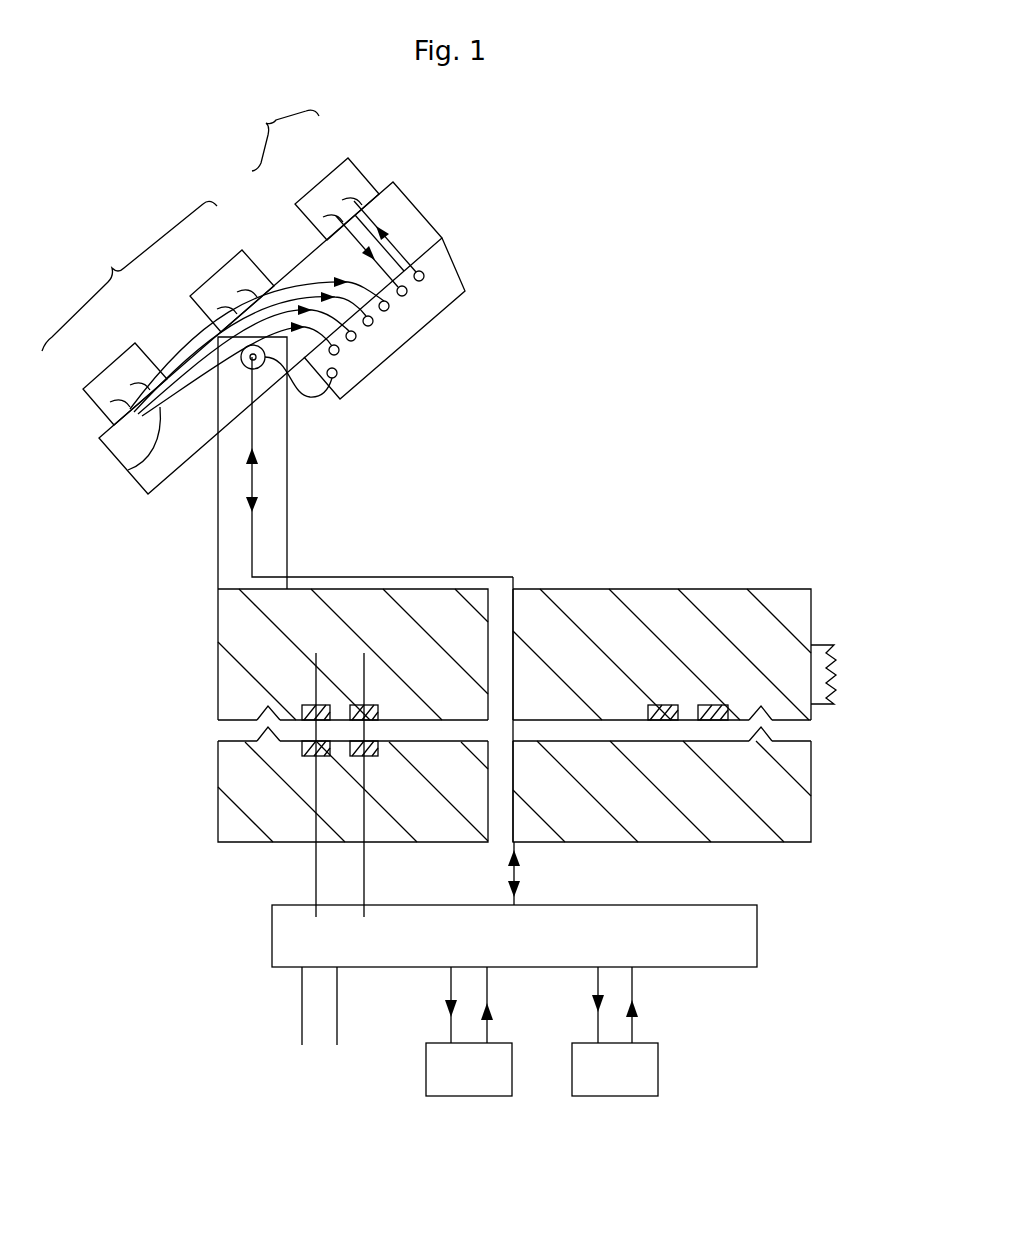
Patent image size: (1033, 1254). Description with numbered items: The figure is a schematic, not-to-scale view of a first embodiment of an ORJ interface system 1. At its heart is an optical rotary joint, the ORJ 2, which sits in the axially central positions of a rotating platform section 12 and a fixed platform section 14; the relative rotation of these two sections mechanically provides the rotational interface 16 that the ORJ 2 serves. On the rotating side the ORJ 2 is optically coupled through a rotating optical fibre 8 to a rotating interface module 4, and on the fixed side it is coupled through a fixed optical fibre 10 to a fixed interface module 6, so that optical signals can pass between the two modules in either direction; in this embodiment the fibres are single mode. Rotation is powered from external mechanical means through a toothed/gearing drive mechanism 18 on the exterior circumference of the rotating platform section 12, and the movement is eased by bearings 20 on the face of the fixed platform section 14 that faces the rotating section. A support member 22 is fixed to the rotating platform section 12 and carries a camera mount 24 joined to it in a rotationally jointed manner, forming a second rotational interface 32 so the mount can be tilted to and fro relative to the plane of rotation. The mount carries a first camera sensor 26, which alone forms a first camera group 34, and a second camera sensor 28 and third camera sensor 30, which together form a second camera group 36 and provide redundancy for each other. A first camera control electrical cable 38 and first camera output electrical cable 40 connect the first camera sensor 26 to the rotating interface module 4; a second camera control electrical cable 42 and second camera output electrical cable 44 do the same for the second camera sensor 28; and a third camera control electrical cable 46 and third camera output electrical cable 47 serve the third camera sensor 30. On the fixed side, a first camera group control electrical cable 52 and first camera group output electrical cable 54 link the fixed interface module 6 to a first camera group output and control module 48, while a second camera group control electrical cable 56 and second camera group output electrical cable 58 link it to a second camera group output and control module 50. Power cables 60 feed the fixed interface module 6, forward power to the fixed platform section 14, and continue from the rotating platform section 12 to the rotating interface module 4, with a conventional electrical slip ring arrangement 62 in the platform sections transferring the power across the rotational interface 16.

The ORJ interface system 1 is at (730, 318).
The ORJ 2 is at (489, 589).
The rotating interface module 4 is at (458, 268).
The fixed interface module 6 is at (740, 942).
The rotating optical fibre 8 is at (312, 399).
The fixed optical fibre 10 is at (518, 875).
The rotating platform section 12 is at (780, 600).
The fixed platform section 14 is at (788, 826).
The rotational interface 16 is at (800, 733).
The toothed/gearing drive mechanism 18 is at (834, 672).
The bearings 20 is at (264, 735).
The support member 22 is at (232, 543).
The camera mount 24 is at (447, 235).
The first camera sensor 26 is at (351, 171).
The second camera sensor 28 is at (217, 292).
The third camera sensor 30 is at (106, 384).
The second rotational interface 32 is at (193, 367).
The first camera group 34 is at (277, 131).
The second camera group 36 is at (129, 276).
The first camera control electrical cable 38 is at (372, 225).
The first camera output electrical cable 40 is at (365, 213).
The second camera control electrical cable 42 is at (315, 272).
The second camera output electrical cable 44 is at (279, 265).
The third camera control electrical cable 46 is at (203, 351).
The third camera output electrical cable 47 is at (128, 468).
The first camera group output and control module 48 is at (599, 1085).
The second camera group output and control module 50 is at (453, 1085).
The first camera group control electrical cable 52 is at (632, 1003).
The first camera group output electrical cable 54 is at (598, 975).
The second camera group control electrical cable 56 is at (487, 985).
The second camera group output electrical cable 58 is at (451, 982).
The power cables 60 is at (316, 655).
The electrical slip ring arrangement 62 is at (354, 703).